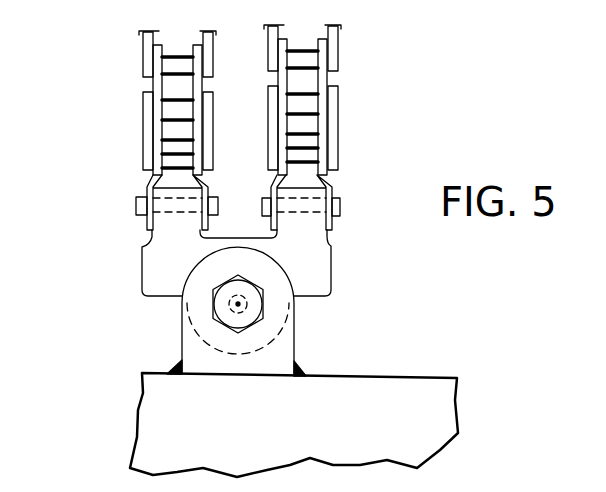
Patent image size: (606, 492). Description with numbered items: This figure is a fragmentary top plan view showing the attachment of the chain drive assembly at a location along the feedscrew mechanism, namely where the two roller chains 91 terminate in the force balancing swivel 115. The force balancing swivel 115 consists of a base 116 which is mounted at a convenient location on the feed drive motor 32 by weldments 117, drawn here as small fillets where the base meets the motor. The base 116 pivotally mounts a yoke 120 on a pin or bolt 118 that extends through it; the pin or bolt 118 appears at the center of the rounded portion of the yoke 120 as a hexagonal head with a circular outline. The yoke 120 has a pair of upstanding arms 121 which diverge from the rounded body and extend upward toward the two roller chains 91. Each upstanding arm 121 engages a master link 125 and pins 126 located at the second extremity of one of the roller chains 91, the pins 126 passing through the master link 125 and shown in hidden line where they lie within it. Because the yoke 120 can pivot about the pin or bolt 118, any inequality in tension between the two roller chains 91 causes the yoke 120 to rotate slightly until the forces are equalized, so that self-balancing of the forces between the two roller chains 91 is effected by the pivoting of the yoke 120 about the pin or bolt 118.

The feed drive motor 32 is at (470, 404).
The roller chains 91 is at (143, 55).
The force balancing swivel 115 is at (262, 311).
The base 116 is at (182, 353).
The weldments 117 is at (298, 372).
The pin or bolt 118 is at (217, 310).
The yoke 120 is at (308, 280).
The upstanding arms 121 is at (168, 233).
The master link 125 is at (147, 182).
The pins 126 is at (134, 204).